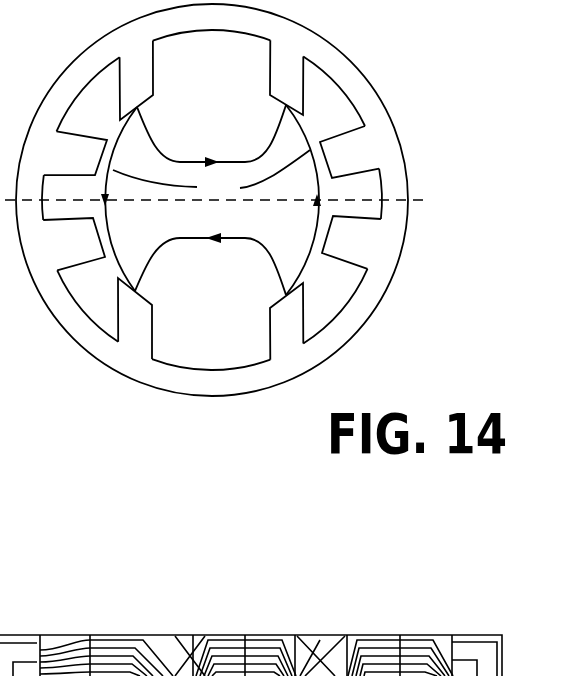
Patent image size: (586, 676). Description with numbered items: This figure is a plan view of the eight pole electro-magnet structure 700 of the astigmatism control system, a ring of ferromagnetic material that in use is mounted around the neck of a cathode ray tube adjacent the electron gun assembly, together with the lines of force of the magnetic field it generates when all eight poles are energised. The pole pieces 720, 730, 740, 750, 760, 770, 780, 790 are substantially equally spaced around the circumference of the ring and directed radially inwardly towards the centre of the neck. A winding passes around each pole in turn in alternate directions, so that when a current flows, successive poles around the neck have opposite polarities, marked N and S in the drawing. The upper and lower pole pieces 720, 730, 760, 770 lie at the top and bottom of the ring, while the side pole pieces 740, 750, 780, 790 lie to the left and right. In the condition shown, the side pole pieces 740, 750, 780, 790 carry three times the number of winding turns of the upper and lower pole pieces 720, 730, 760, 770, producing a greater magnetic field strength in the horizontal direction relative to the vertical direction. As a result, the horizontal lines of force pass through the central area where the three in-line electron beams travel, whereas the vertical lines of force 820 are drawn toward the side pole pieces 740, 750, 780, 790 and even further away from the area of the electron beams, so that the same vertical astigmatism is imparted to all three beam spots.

The eight pole electro-magnet structure 700 is at (357, 63).
The pole piece 720 is at (154, 72).
The pole piece 730 is at (270, 82).
The side pole piece 740 is at (352, 130).
The side pole piece 750 is at (352, 268).
The pole piece 760 is at (270, 328).
The pole piece 770 is at (152, 336).
The side pole piece 780 is at (105, 258).
The side pole piece 790 is at (119, 120).
The vertical lines of force 820 is at (211, 177).